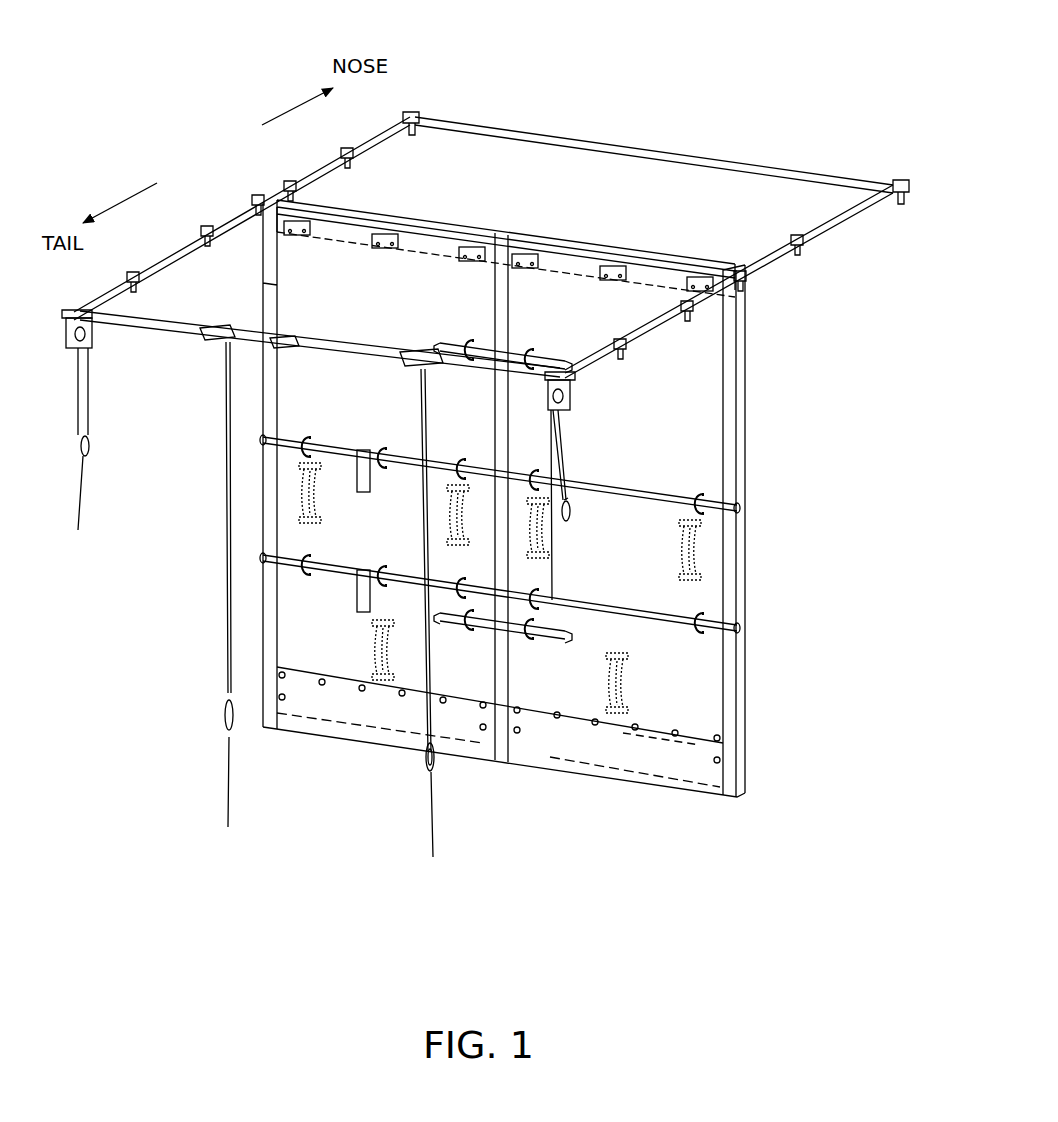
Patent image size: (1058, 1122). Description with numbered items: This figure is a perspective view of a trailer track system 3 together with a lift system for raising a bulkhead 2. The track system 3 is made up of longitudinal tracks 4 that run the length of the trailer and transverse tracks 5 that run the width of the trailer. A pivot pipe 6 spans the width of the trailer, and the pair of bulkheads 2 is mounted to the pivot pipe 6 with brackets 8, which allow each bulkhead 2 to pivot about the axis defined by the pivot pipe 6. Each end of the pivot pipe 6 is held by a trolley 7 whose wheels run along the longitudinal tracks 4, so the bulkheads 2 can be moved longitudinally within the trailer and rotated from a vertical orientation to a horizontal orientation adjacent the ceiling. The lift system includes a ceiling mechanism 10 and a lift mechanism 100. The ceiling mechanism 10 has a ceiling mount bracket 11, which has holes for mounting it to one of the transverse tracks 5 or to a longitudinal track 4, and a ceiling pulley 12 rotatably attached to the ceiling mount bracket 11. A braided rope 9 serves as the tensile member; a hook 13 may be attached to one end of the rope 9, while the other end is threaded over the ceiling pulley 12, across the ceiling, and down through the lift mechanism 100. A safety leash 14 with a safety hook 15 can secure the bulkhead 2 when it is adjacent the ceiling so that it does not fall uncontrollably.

The bulkhead 2 is at (670, 682).
The track system 3 is at (397, 114).
The longitudinal tracks 4 is at (840, 213).
The transverse tracks 5 is at (525, 127).
The pivot pipe 6 is at (413, 227).
The trolley 7 is at (262, 203).
The brackets 8 is at (616, 267).
The braided rope 9 is at (428, 823).
The ceiling mechanism 10 is at (422, 338).
The ceiling mount bracket 11 is at (413, 368).
The ceiling pulley 12 is at (562, 442).
The hook 13 is at (427, 768).
The safety leash 14 is at (567, 490).
The safety hook 15 is at (570, 522).
The lift mechanism 100 is at (567, 413).